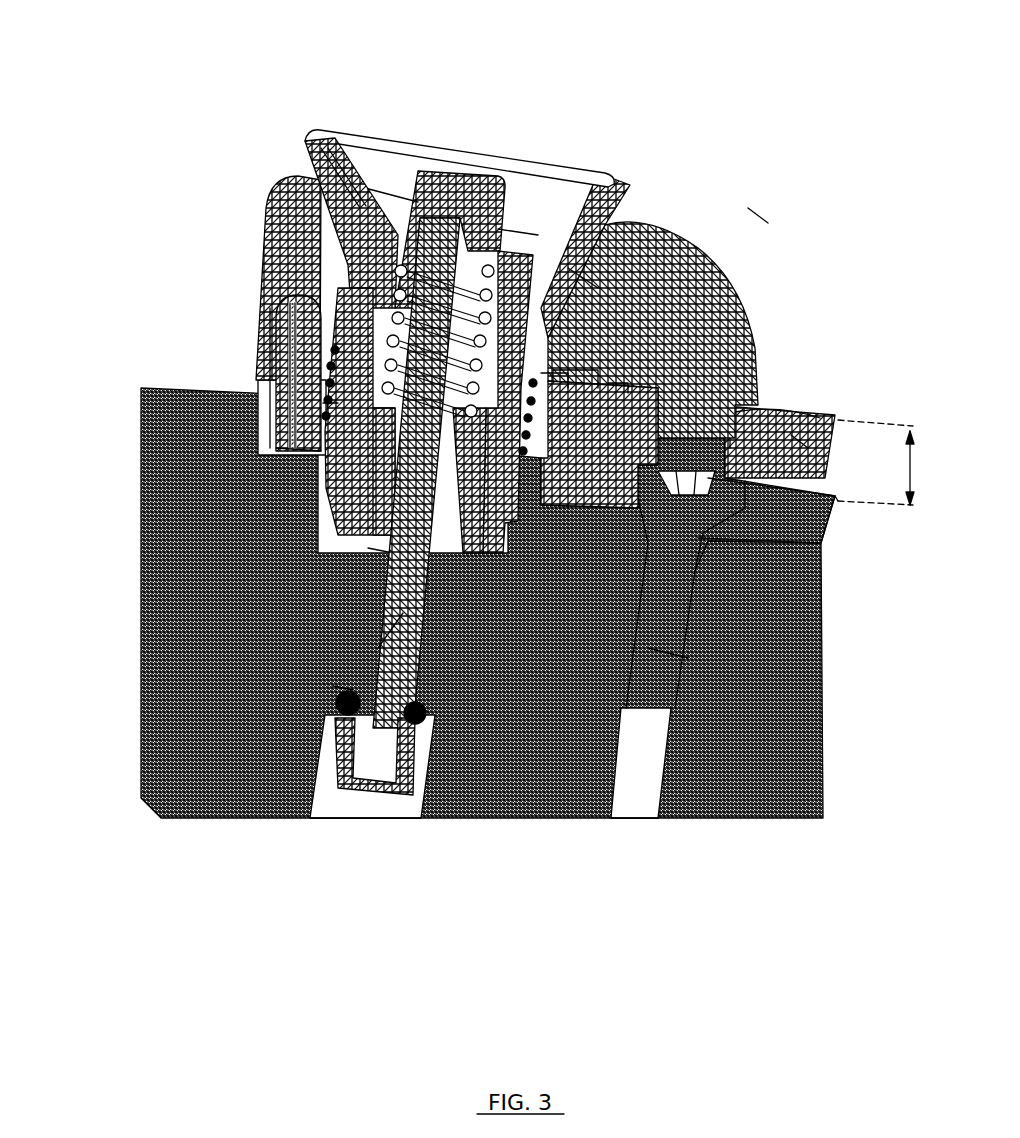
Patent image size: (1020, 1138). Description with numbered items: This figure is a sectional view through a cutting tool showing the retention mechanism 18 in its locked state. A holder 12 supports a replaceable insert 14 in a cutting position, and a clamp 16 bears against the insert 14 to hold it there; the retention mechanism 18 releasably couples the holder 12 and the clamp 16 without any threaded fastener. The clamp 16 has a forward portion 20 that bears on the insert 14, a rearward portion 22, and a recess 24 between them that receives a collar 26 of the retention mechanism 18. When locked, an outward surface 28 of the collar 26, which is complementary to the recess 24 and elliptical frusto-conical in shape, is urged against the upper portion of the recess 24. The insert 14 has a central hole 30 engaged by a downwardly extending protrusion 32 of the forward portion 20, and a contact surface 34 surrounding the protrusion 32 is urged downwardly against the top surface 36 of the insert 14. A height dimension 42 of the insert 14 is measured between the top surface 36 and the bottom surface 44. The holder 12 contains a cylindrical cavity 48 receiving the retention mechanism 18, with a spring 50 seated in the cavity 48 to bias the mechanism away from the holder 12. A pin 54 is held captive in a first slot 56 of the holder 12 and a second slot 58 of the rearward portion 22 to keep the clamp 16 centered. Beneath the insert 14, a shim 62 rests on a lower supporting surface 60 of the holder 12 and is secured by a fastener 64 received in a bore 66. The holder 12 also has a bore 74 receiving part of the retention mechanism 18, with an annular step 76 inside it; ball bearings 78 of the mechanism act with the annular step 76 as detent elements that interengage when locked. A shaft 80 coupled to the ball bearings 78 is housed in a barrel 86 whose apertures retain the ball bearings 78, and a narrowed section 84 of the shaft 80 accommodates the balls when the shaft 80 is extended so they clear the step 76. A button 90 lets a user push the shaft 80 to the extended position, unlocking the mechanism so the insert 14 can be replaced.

The holder 12 is at (790, 775).
The replaceable insert 14 is at (787, 410).
The clamp 16 is at (720, 265).
The retention mechanism 18 is at (345, 128).
The forward portion 20 is at (730, 212).
The rearward portion 22 is at (226, 207).
The recess 24 is at (563, 273).
The collar 26 is at (585, 212).
The outward surface 28 is at (640, 205).
The central hole 30 is at (783, 427).
The protrusion 32 is at (730, 422).
The contact surface 34 is at (652, 385).
The top surface 36 is at (618, 388).
The height dimension 42 is at (900, 462).
The bottom surface 44 is at (830, 493).
The cylindrical cavity 48 is at (320, 375).
The spring 50 is at (300, 400).
The pin 54 is at (270, 340).
The first slot 56 is at (270, 420).
The second slot 58 is at (292, 300).
The lower supporting surface 60 is at (800, 532).
The shim 62 is at (793, 512).
The fastener 64 is at (660, 622).
The bore 66 is at (680, 670).
The bore 74 is at (353, 547).
The annular step 76 is at (317, 708).
The ball bearings 78 is at (293, 808).
The shaft 80 is at (387, 603).
The narrowed section 84 is at (325, 678).
The barrel 86 is at (353, 570).
The button 90 is at (466, 195).